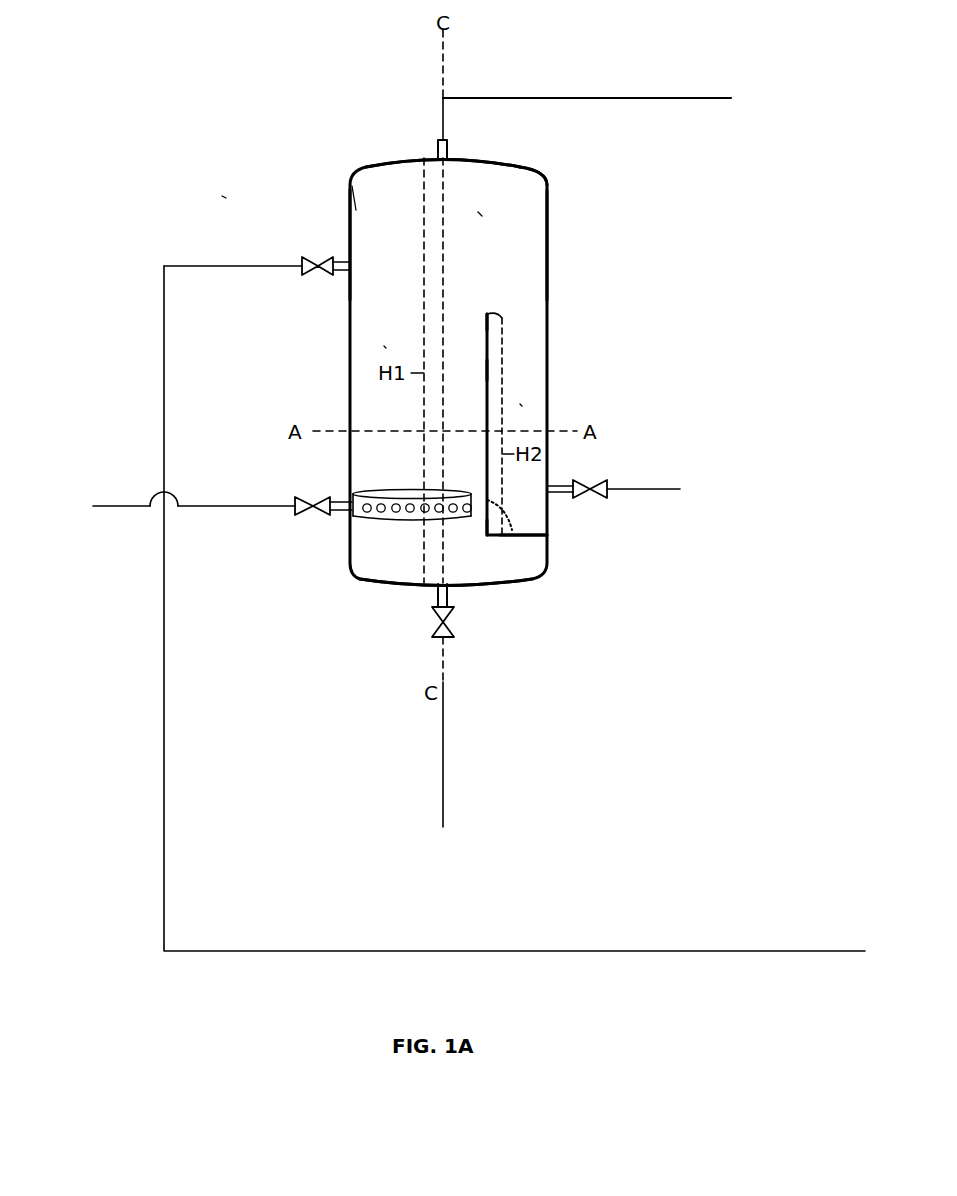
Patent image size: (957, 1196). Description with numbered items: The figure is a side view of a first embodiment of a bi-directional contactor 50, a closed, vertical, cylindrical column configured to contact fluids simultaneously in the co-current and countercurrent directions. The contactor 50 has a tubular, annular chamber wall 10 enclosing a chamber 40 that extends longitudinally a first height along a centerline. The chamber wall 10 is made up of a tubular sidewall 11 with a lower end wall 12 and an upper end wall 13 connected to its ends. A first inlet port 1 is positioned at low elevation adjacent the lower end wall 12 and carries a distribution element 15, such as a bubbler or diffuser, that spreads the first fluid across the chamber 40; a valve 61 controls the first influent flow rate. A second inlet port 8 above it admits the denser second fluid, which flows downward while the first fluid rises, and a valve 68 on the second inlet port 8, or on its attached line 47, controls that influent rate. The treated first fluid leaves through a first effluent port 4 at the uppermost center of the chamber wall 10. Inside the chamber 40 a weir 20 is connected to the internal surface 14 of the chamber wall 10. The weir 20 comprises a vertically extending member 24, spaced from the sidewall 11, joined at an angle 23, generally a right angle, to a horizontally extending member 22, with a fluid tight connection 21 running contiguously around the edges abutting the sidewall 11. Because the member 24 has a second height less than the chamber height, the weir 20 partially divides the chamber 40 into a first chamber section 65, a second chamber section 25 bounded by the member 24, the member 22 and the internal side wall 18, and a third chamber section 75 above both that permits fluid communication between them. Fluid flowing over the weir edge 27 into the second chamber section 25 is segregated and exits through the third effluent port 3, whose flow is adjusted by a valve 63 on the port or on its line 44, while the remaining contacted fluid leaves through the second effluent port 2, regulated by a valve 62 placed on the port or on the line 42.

The bi-directional contactor 50 is at (222, 196).
The chamber wall 10 is at (349, 213).
The upper end wall 13 is at (400, 158).
The lower end wall 12 is at (375, 578).
The internal side wall 18 is at (354, 196).
The sidewall 11 is at (546, 220).
The internal surface 14 is at (549, 178).
The third chamber section 75 is at (378, 178).
The chamber 40 is at (482, 208).
The first chamber section 65 is at (384, 346).
The first effluent port 4 is at (438, 148).
The second effluent port 2 is at (447, 598).
The valve 62 is at (434, 622).
The line 42 is at (445, 734).
The weir 20 is at (487, 333).
The weir edge 27 is at (489, 313).
The vertically extending member 24 is at (487, 374).
The connection 21 is at (548, 536).
The horizontally extending member 22 is at (505, 538).
The angle 23 is at (507, 517).
The second chamber section 25 is at (520, 405).
The distribution element 15 is at (358, 510).
The first inlet port 1 is at (338, 500).
The valve 61 is at (296, 500).
The second inlet port 8 is at (338, 261).
The valve 68 is at (317, 276).
The line 47 is at (164, 669).
The third effluent port 3 is at (558, 487).
The valve 63 is at (590, 498).
The line 44 is at (619, 489).